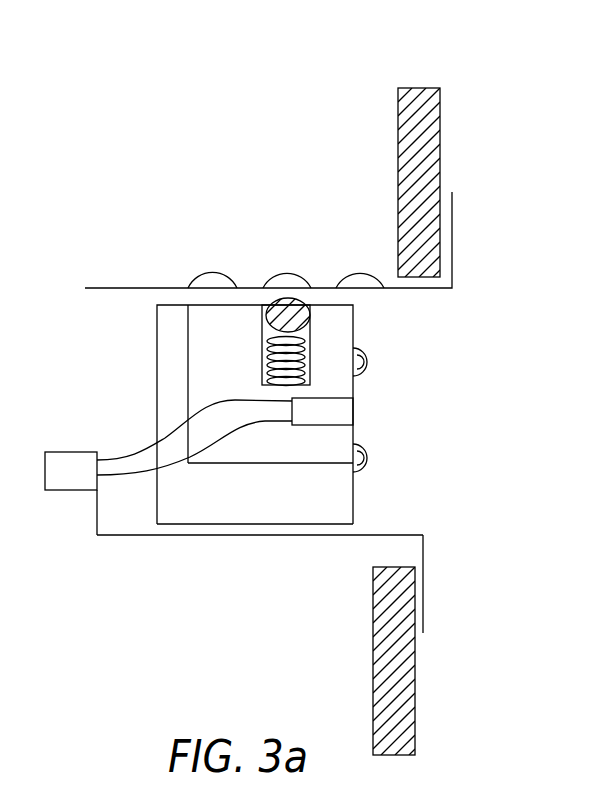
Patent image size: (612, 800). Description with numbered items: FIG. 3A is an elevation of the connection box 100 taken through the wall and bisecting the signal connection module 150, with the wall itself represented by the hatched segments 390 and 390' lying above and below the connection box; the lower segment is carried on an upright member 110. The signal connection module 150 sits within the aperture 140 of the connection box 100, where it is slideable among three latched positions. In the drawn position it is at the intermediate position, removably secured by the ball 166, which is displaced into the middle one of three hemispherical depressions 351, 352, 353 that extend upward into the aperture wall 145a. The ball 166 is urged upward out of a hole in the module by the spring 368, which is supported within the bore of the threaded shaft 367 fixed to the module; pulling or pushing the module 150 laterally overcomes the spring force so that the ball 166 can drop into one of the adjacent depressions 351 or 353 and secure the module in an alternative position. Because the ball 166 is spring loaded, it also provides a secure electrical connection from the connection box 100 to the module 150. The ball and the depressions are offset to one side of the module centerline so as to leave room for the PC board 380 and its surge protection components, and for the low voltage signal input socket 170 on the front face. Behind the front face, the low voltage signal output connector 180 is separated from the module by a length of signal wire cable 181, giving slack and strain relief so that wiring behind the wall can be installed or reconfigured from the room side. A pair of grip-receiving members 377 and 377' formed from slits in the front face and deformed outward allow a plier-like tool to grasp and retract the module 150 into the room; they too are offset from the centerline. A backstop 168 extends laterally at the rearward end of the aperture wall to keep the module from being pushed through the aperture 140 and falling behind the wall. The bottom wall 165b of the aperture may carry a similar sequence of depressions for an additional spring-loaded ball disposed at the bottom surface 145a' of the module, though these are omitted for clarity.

The connection box 100 is at (470, 542).
The lower wall 110 is at (430, 580).
The aperture 140 is at (395, 405).
The connection box aperture wall 145a is at (268, 227).
The bottom surface of signal connection module 145a' is at (260, 559).
The signal connection module 150 is at (250, 158).
The bottom wall 165b is at (210, 525).
The ball 166 is at (267, 300).
The backstop 168 is at (97, 540).
The low voltage signal input socket 170 is at (353, 427).
The low voltage signal output connector 180 is at (48, 492).
The signal wire cable 181 is at (200, 490).
The hemispherical depression 351 is at (350, 273).
The hemispherical depression 352 is at (285, 277).
The hemispherical depression 353 is at (193, 278).
The threaded shaft 367 is at (262, 357).
The spring 368 is at (285, 336).
The grip-receiving member 377 is at (399, 483).
The grip-receiving member 377' is at (386, 351).
The PC board 380 is at (278, 465).
The wall segment 390 is at (458, 176).
The wall segment 390' is at (443, 664).